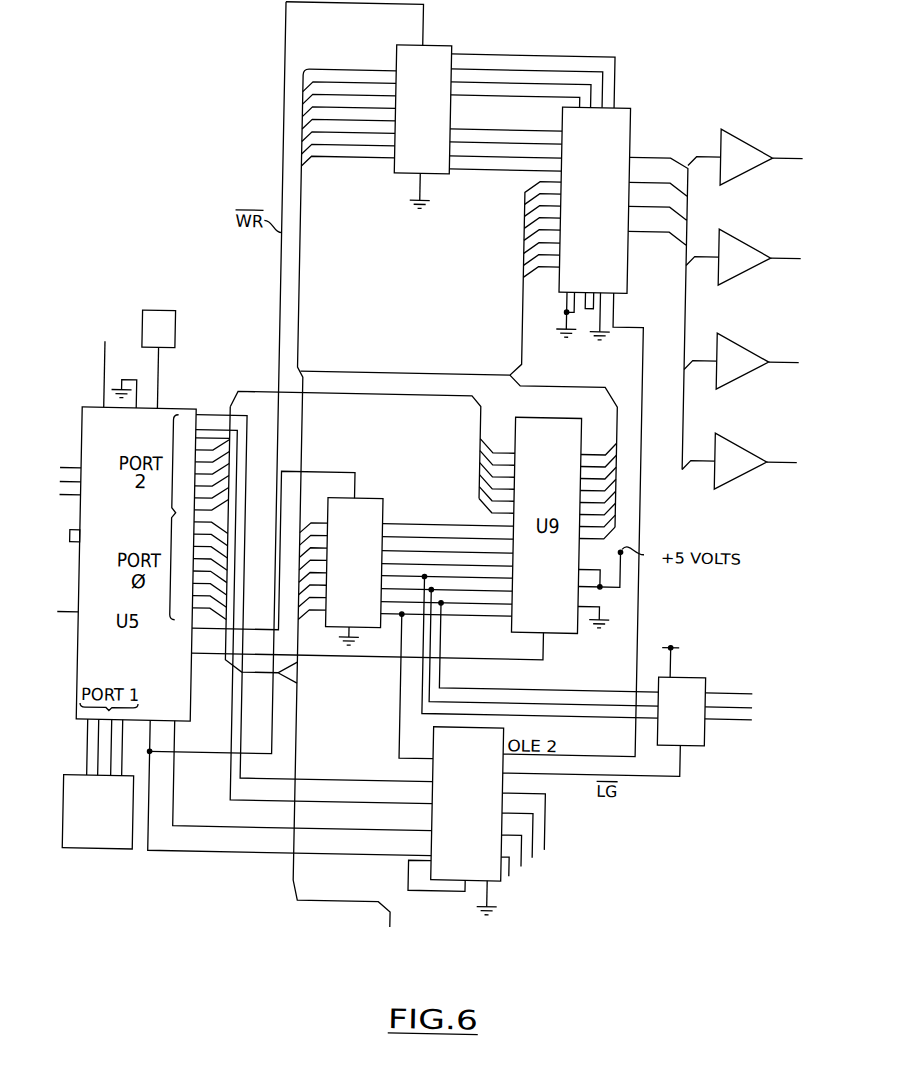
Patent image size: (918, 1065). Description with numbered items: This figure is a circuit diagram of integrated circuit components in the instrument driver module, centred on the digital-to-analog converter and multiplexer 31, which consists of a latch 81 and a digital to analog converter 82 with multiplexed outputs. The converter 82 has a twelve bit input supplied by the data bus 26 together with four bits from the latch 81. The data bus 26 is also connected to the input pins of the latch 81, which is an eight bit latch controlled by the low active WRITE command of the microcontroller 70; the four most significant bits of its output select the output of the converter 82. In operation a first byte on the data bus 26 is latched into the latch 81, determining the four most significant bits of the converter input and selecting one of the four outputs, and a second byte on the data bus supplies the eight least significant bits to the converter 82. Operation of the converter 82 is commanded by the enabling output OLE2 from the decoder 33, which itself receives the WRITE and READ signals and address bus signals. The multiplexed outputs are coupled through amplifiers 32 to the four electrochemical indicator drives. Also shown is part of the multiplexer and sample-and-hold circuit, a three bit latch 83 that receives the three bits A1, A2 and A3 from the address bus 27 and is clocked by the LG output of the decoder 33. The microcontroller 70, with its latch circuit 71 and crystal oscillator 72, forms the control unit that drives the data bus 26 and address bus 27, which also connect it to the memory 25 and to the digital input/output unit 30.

The memory 25 is at (560, 634).
The data bus 26 is at (417, 373).
The address bus 27 is at (468, 452).
The digital input/output unit 30 is at (110, 855).
The digital-to-analog converter and multiplexer 31 is at (455, 216).
The amplifiers 32 is at (736, 477).
The decoder 33 is at (500, 882).
The microcontroller 70 is at (91, 414).
The latch circuit 71 is at (384, 511).
The crystal oscillator 72 is at (172, 340).
The latch 81 is at (388, 60).
The digital to analog converter 82 is at (623, 136).
The three bit latch 83 is at (702, 673).